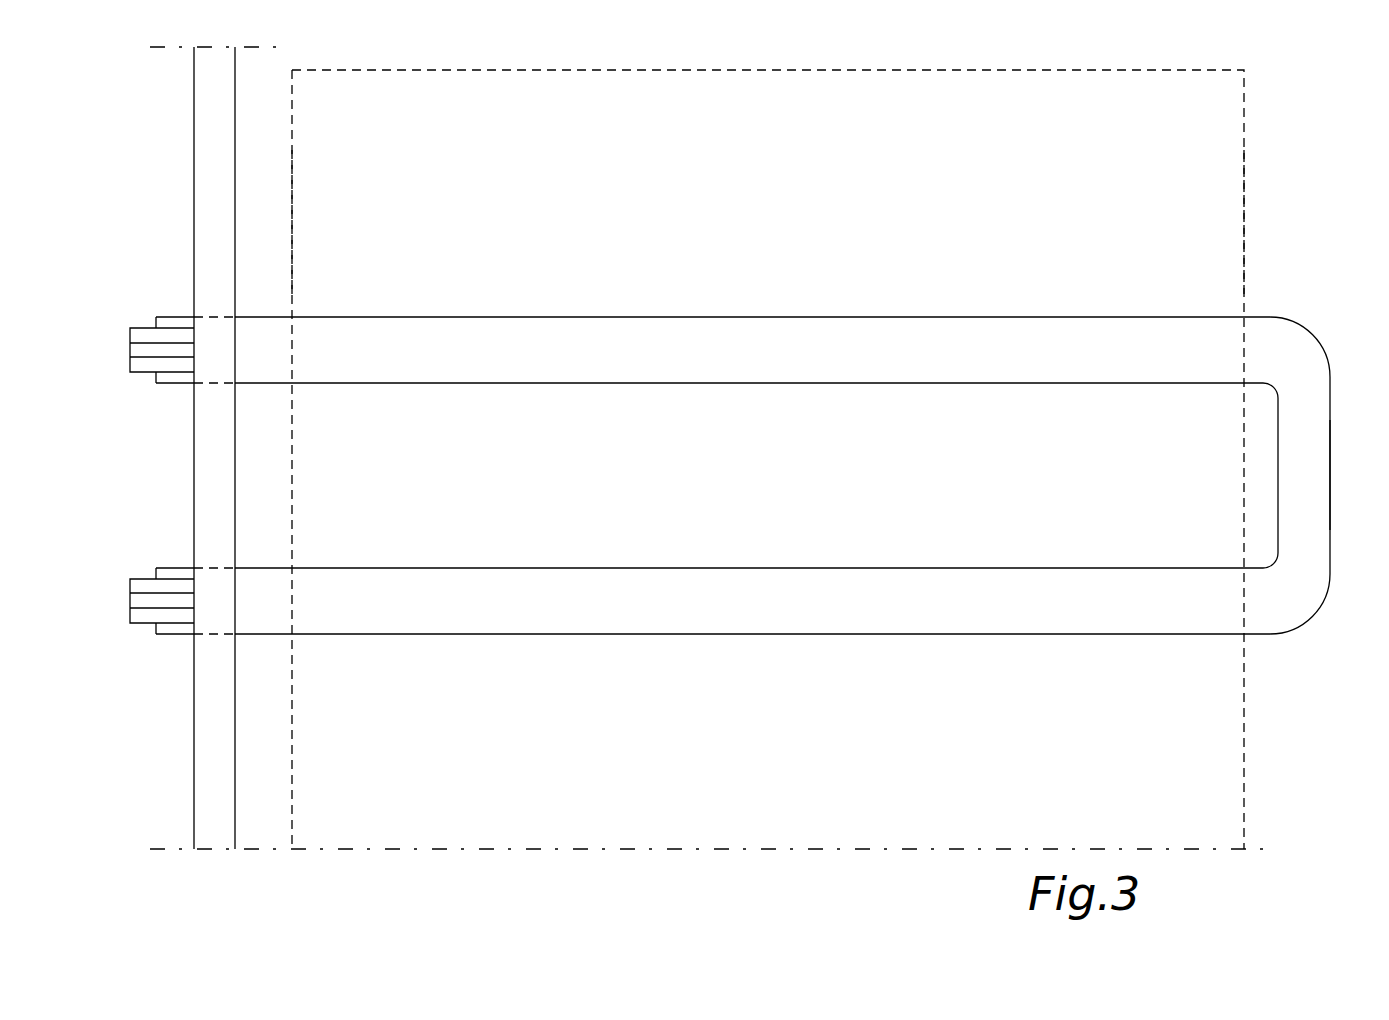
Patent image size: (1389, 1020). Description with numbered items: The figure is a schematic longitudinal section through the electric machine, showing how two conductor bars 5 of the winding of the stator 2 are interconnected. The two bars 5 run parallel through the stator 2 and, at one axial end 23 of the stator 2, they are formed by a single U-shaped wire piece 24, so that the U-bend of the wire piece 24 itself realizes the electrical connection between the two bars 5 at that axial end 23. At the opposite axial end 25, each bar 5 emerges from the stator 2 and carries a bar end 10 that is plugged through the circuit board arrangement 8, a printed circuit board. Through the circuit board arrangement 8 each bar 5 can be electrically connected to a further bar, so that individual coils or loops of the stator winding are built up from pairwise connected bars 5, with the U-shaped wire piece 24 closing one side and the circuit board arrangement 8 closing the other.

The stator 2 is at (932, 70).
The bar 5 is at (810, 343).
The circuit board arrangement 8 is at (208, 125).
The bar end 10 is at (130, 360).
The axial end 23 is at (1245, 220).
The U-shaped wire piece 24 is at (1310, 608).
The opposite axial end 25 is at (290, 220).